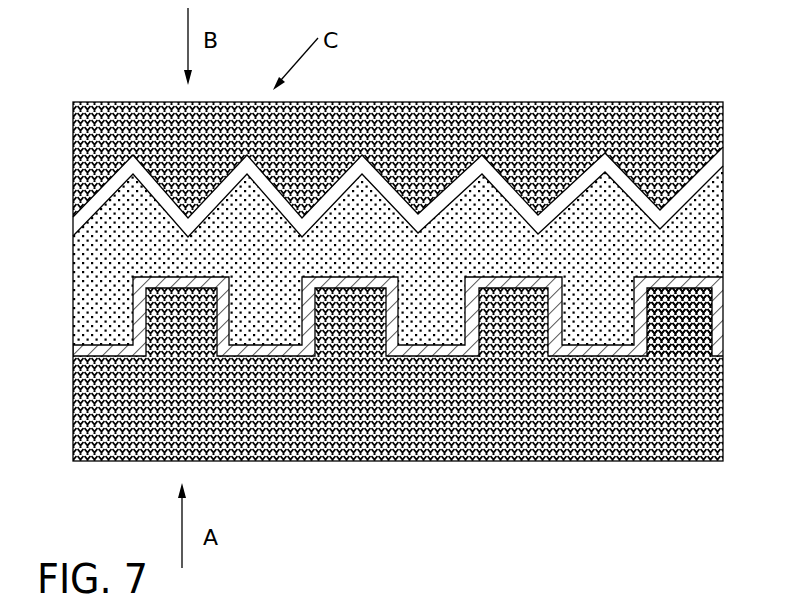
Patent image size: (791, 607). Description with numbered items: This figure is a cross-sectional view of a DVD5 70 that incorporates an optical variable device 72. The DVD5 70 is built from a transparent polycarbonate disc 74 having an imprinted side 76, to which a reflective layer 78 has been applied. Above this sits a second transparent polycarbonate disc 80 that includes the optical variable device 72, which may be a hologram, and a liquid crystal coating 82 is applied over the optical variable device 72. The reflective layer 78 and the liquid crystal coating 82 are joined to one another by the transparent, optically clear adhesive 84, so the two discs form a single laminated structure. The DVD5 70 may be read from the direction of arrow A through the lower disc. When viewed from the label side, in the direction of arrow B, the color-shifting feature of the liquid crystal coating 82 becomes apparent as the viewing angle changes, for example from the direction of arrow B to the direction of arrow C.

The DVD5 70 is at (597, 90).
The optical variable device 72 is at (418, 196).
The transparent polycarbonate disc 74 is at (343, 420).
The imprinted side 76 is at (703, 332).
The reflective layer 78 is at (710, 367).
The second transparent polycarbonate disc 80 is at (318, 156).
The liquid crystal coating 82 is at (658, 202).
The transparent, optically clear adhesive 84 is at (361, 264).